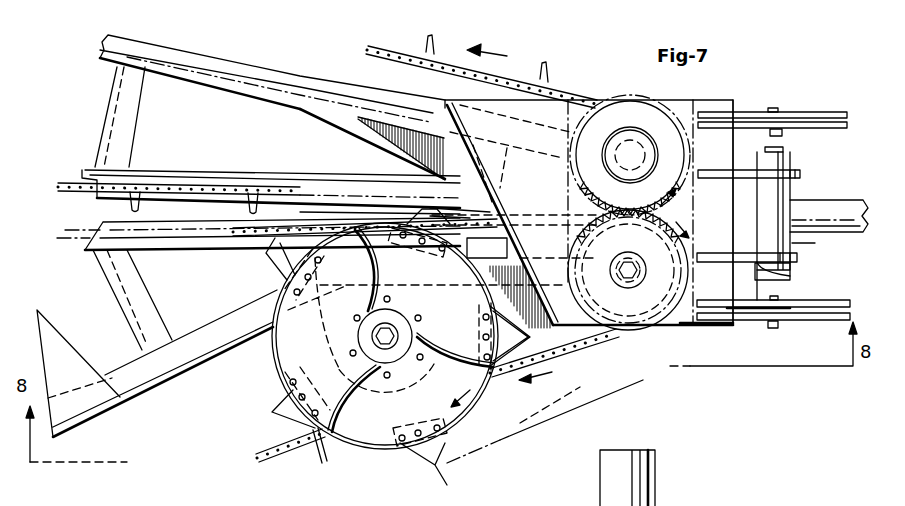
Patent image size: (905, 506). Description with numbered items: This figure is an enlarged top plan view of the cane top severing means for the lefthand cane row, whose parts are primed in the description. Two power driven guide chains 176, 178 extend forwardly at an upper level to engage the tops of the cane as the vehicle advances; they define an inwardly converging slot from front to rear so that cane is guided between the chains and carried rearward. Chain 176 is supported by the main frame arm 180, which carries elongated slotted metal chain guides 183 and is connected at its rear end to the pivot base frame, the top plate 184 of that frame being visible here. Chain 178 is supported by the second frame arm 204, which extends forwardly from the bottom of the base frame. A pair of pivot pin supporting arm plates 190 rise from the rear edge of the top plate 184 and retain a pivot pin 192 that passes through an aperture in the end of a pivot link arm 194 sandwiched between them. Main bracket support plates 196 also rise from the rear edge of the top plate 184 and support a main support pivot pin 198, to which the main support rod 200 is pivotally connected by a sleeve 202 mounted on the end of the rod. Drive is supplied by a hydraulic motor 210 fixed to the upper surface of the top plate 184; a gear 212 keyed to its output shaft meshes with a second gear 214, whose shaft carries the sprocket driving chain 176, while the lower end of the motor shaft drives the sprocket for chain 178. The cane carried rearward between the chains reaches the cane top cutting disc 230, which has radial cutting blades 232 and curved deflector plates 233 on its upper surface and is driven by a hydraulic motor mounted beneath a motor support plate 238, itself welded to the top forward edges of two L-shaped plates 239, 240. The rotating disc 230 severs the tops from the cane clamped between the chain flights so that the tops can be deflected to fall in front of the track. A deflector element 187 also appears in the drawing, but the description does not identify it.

The main frame arm 180 is at (192, 58).
The power driven guide chain 176 is at (157, 187).
The elongated slotted metal chain guide 183 is at (273, 178).
The deflector shield 187 is at (383, 140).
The top plate 184 is at (545, 117).
The gear 212 is at (587, 187).
The second gear 214 is at (633, 307).
The power driven guide chain 178 is at (248, 233).
The second frame arm 204 is at (187, 357).
The cane top cutting disc 230 is at (365, 443).
The curved deflector plate 233 is at (373, 271).
The radial cutting blade 232 is at (437, 468).
The motor support plate 238 is at (540, 397).
The hydraulic motor 210 is at (660, 485).
The pivot link arm 194 is at (833, 115).
The pivot pin 192 is at (780, 134).
The pivot pin supporting arm plate 190 is at (743, 113).
The main bracket support plate 196 is at (802, 172).
The main support pivot pin 198 is at (777, 280).
The L-shaped plate 240 is at (740, 270).
The main support rod 200 is at (838, 202).
The sleeve 202 is at (815, 243).
The L-shaped plate 239 is at (738, 325).